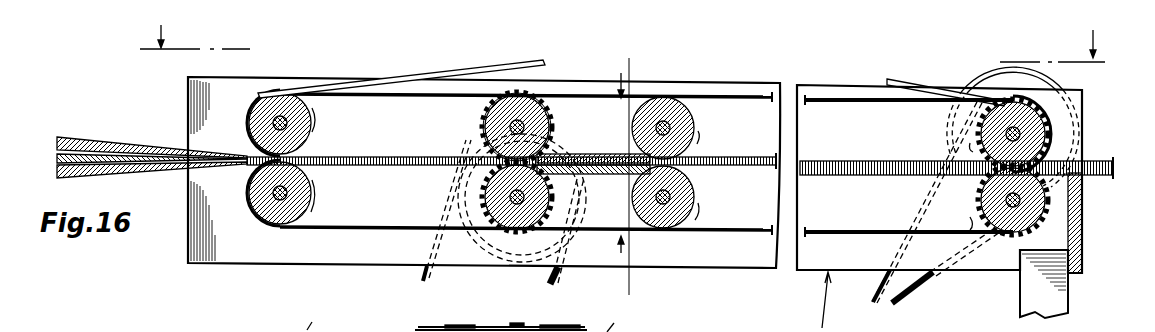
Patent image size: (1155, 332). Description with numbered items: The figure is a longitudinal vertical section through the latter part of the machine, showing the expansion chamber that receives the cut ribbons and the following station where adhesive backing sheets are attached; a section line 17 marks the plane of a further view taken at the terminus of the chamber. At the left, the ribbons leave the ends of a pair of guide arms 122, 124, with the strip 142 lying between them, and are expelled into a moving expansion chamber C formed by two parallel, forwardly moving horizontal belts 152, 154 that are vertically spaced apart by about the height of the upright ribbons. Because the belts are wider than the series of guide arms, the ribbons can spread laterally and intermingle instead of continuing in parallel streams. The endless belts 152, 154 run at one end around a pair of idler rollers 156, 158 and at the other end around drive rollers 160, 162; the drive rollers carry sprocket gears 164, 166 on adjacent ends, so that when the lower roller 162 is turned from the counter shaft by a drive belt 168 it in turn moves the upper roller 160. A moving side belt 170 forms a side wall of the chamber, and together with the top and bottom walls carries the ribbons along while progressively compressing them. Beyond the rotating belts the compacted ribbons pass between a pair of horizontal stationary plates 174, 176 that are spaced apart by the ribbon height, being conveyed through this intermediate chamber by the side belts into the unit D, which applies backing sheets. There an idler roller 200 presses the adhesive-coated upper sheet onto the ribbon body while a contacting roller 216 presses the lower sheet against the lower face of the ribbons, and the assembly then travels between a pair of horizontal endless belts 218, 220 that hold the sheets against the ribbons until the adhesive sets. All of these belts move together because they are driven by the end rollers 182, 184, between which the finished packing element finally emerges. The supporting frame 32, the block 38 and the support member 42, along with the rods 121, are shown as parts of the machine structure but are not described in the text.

The section line 17- 17 is at (626, 160).
The frame 32 is at (340, 255).
The block 38 is at (1084, 262).
The support member 42 is at (1062, 305).
The guide arm 122 is at (172, 140).
The guide arm 124 is at (172, 172).
The strip 142 is at (170, 160).
The horizontal belt 152 is at (351, 156).
The horizontal belt 154 is at (330, 170).
The idler roller 156 is at (285, 105).
The idler roller 158 is at (263, 217).
The drive roller 160 is at (533, 103).
The drive roller 162 is at (490, 195).
The sprocket gear 164 is at (553, 113).
The sprocket gear 166 is at (560, 213).
The drive belt 168 is at (422, 278).
The moving side belt 170 is at (503, 60).
The stationary plate 174 is at (598, 156).
The stationary plate 176 is at (623, 176).
The drive roller 182 is at (990, 133).
The drive roller 184 is at (985, 211).
The idler roller 200 is at (688, 126).
The contacting roller 216 is at (688, 193).
The endless belt 218 is at (842, 160).
The endless belt 220 is at (835, 230).
The drive rods 121 is at (896, 305).
The expansion chamber C is at (412, 157).
The unit D is at (824, 302).